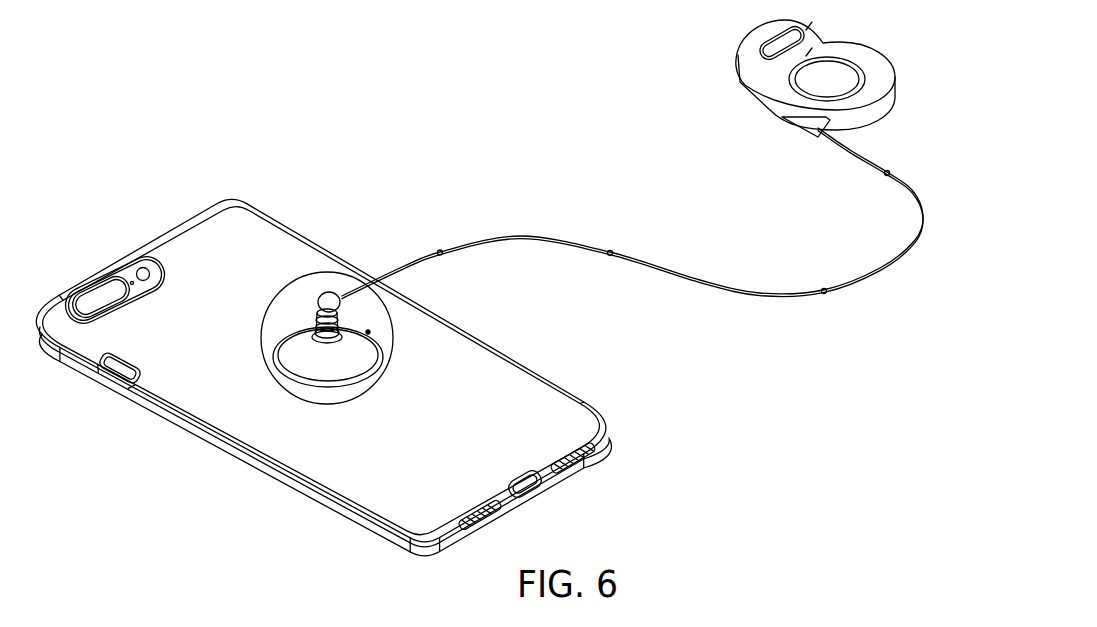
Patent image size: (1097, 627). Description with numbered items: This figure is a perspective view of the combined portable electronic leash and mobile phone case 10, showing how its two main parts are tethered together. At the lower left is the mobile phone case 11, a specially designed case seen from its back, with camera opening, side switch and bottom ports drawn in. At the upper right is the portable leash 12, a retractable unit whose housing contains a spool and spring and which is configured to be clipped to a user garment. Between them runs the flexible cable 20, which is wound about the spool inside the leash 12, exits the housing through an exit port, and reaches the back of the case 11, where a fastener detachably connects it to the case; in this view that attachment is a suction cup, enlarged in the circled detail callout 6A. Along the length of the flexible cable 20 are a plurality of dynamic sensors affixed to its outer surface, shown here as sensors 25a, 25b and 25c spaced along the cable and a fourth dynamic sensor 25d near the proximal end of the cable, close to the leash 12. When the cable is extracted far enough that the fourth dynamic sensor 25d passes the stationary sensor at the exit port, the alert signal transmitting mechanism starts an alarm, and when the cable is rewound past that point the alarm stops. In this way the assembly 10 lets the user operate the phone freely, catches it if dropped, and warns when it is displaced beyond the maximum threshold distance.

The combined portable electronic leash and mobile phone case 10 is at (873, 21).
The mobile phone case 11 is at (573, 393).
The portable leash 12 is at (762, 67).
The flexible cable 20 is at (742, 289).
The first cord segment point 25a is at (440, 250).
The second cord segment point 25b is at (610, 250).
The third cord segment point 25c is at (825, 294).
The fourth dynamic sensor 25d is at (890, 172).
The suction cup mount detail (FIG. 6A callout) 6A is at (275, 381).